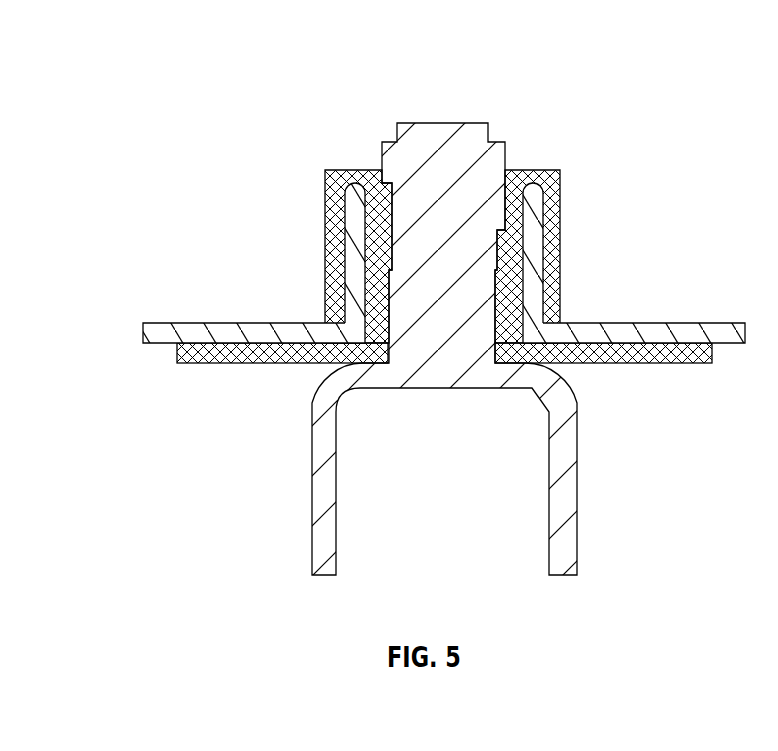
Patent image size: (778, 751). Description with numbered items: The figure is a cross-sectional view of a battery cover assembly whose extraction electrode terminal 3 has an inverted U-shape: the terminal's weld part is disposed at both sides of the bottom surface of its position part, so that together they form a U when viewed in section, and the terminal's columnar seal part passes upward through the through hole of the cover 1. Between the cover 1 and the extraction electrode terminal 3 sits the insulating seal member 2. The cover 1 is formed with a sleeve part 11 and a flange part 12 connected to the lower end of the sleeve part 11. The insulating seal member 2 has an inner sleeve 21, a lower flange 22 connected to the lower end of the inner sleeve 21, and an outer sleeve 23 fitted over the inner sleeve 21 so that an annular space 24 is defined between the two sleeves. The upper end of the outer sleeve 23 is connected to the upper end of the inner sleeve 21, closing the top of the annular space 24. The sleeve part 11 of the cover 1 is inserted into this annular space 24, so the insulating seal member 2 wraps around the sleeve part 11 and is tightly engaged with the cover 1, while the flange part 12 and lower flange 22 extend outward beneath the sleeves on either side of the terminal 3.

The cover 1 is at (248, 323).
The sleeve part 11 is at (343, 265).
The flange part 12 is at (144, 343).
The insulating seal member 2 is at (327, 183).
The extraction electrode terminal 3 is at (382, 142).
The inner sleeve 21 is at (507, 190).
The lower flange 22 is at (623, 363).
The outer sleeve 23 is at (547, 293).
The annular space 24 is at (560, 230).